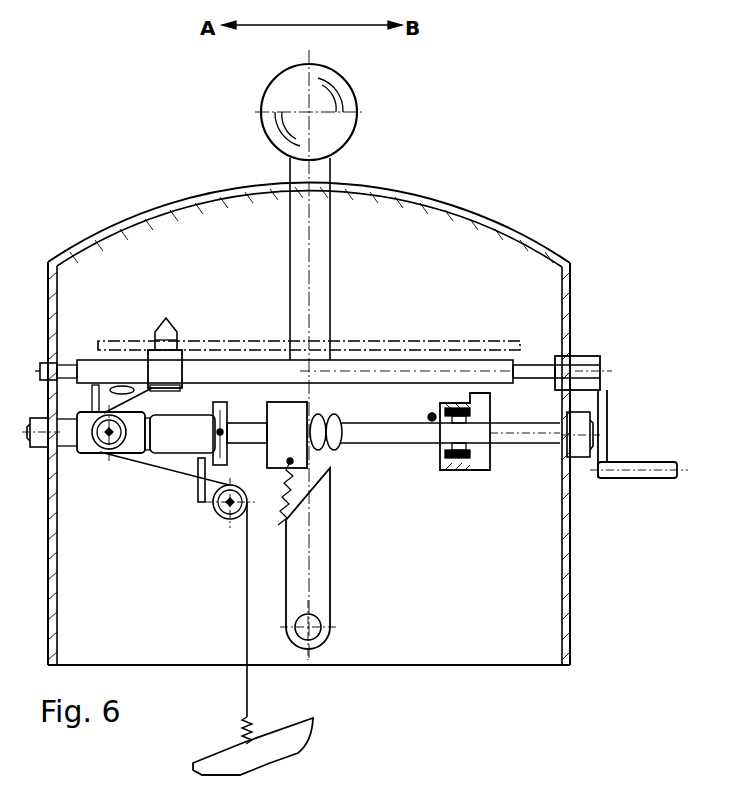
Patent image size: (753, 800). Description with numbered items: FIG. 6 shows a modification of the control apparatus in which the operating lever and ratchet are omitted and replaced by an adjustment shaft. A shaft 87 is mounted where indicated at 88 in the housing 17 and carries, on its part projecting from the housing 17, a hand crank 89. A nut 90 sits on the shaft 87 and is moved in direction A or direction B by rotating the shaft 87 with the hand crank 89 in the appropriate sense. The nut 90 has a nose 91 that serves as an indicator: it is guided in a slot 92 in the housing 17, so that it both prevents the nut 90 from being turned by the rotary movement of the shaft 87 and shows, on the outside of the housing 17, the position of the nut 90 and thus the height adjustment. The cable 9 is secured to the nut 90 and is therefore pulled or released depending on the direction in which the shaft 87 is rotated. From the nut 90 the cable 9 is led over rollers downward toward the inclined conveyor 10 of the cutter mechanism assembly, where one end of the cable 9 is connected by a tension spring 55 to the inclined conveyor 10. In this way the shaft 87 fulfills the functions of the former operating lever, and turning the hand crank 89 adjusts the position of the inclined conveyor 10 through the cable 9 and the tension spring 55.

The housing 17 is at (484, 212).
The cable 9 is at (122, 387).
The nut 90 is at (157, 358).
The nose 91 is at (167, 325).
The shaft 87 is at (213, 365).
The slot 92 is at (410, 341).
The shaft mounting 88 is at (572, 356).
The hand crank 89 is at (617, 468).
The tension spring 55 is at (290, 732).
The inclined conveyor 10 is at (275, 752).